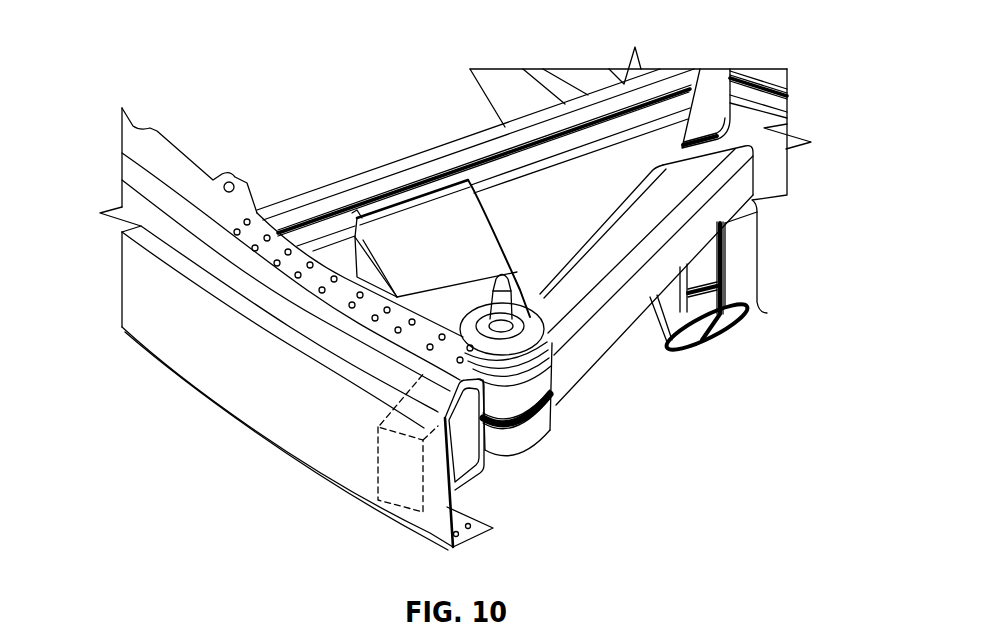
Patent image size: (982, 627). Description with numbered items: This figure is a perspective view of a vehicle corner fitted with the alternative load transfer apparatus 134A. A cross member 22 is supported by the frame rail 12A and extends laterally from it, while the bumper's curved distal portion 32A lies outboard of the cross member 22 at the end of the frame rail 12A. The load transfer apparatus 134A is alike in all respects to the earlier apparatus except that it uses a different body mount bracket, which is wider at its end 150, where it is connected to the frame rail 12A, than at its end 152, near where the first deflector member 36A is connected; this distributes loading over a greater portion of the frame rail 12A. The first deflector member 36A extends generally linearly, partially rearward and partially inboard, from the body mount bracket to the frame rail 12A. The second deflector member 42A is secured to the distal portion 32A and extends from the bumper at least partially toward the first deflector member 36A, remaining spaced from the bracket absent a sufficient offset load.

The cross member 22 is at (567, 87).
The frame rail 12A is at (467, 160).
The end of body mount bracket 150 is at (398, 205).
The distal portion 32A is at (280, 380).
The first deflector member 36A is at (593, 363).
The end of body mount bracket 152 is at (543, 415).
The second deflector member 42A is at (452, 468).
The load transfer apparatus 134A is at (722, 388).